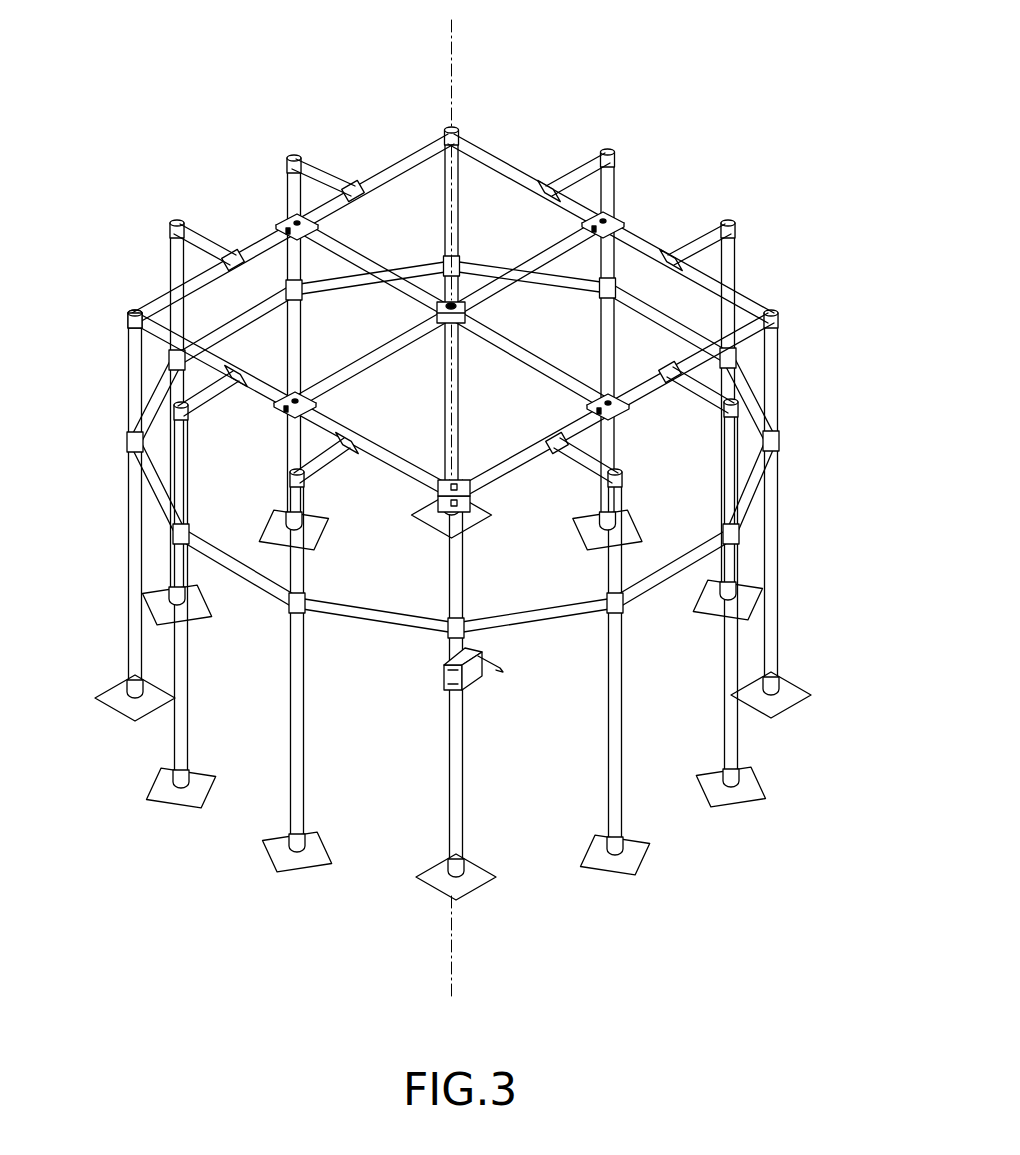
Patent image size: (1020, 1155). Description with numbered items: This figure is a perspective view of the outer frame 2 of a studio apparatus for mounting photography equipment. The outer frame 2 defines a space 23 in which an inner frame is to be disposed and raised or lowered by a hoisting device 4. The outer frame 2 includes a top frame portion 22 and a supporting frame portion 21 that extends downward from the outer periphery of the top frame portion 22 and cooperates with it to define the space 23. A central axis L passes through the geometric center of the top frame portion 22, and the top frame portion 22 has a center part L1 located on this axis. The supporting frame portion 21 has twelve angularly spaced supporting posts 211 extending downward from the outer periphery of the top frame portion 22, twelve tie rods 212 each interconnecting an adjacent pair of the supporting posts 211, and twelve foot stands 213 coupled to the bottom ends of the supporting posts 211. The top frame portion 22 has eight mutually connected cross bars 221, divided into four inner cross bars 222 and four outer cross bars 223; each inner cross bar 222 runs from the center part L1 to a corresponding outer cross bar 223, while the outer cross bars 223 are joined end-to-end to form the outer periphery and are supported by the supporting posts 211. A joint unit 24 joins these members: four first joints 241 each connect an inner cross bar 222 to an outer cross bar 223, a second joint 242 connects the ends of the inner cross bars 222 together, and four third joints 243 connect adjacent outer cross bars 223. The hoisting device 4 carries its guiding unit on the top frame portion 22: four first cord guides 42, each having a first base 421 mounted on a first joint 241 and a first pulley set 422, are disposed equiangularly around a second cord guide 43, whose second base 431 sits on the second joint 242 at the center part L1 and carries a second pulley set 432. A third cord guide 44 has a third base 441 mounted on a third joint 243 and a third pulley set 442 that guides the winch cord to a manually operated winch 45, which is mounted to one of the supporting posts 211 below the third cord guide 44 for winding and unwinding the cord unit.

The outer frame 2 is at (549, 130).
The supporting frame portion 21 is at (778, 564).
The supporting posts 211 is at (731, 672).
The tie rods 212 is at (751, 493).
The foot stands 213 is at (723, 797).
The top frame portion 22 is at (487, 147).
The cross bars 221 is at (499, 295).
The inner cross bars 222 is at (372, 266).
The outer cross bars 223 is at (405, 157).
The space 23 is at (362, 782).
The joint unit 24 is at (128, 444).
The first joints 241 is at (262, 242).
The second joint 242 is at (445, 326).
The third joints 243 is at (132, 312).
The hoisting device 4 is at (441, 684).
The first cord guides 42 is at (280, 408).
The first base 421 is at (285, 221).
The first pulley set 422 is at (290, 214).
The second cord guide 43 is at (474, 311).
The second base 431 is at (466, 317).
The second pulley set 432 is at (435, 311).
The third cord guide 44 is at (452, 531).
The third base 441 is at (470, 502).
The third pulley set 442 is at (437, 492).
The winch 45 is at (480, 674).
The central axis L is at (457, 522).
The center part L1 is at (462, 334).